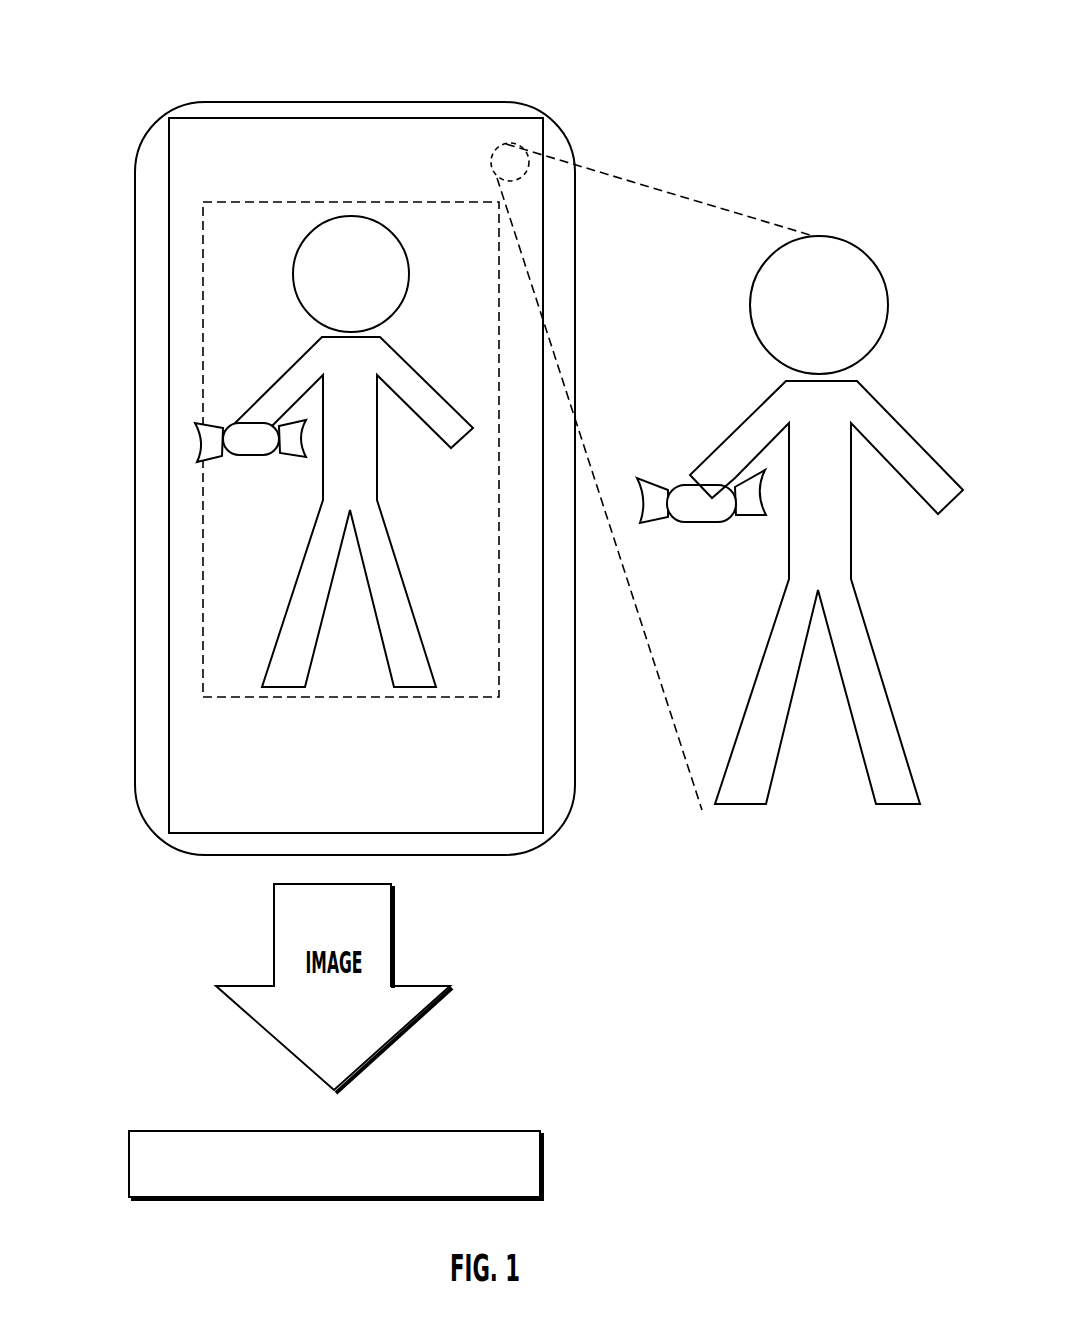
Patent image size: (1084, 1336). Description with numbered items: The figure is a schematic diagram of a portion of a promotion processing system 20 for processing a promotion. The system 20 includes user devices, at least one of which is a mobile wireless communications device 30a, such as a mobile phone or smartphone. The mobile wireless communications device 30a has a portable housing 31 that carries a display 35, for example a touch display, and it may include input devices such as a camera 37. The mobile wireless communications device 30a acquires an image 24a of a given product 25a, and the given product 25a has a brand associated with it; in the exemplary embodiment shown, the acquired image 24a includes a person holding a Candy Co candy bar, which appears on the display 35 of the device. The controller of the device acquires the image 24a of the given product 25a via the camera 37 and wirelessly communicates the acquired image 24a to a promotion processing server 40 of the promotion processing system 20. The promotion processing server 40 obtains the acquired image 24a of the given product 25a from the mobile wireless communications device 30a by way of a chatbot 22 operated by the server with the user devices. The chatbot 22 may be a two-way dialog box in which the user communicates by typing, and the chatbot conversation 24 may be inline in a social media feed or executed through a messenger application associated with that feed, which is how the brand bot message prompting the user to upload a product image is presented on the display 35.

The promotion processing system 20 is at (698, 75).
The mobile wireless communications device 30a is at (178, 101).
The portable housing 31 is at (245, 102).
The camera 37 is at (508, 143).
The display 35 is at (203, 545).
The acquired image 24a is at (202, 348).
The given product 25a is at (195, 445).
The chatbot 22 is at (194, 725).
The chatbot conversation 24 is at (203, 757).
The promotion processing server 40 is at (541, 1161).